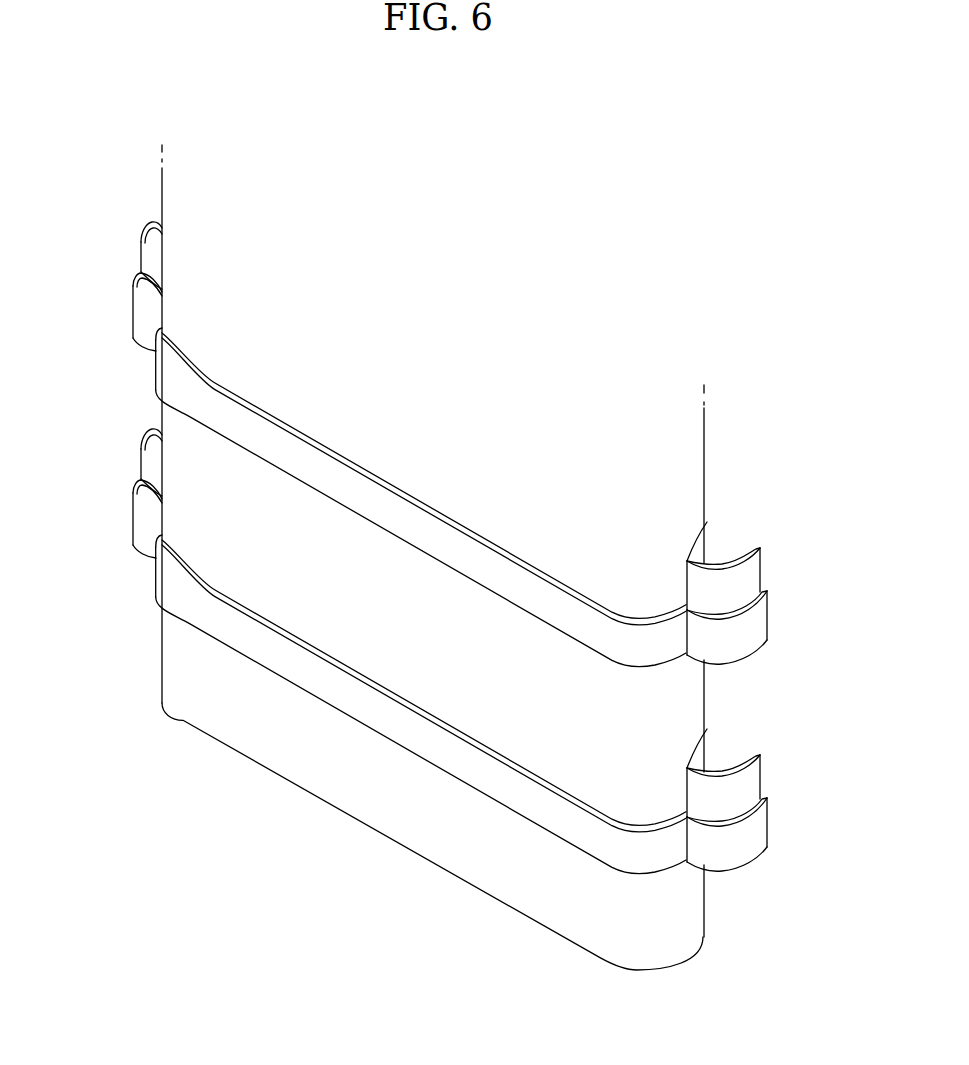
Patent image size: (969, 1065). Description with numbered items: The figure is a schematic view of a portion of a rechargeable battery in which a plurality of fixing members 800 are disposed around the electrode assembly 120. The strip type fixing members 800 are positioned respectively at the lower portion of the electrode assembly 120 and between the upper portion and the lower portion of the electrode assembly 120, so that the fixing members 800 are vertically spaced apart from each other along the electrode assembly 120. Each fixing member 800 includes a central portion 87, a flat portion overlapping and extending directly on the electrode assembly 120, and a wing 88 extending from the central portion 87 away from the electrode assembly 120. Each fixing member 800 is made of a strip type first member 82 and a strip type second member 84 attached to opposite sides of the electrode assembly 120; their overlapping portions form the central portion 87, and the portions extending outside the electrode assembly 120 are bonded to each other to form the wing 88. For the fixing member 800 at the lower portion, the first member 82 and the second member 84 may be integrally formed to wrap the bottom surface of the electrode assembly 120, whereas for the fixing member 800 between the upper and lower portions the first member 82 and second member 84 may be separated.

The electrode assembly 120 is at (430, 833).
The fixing member 800 is at (436, 558).
The central portion 87 is at (266, 656).
The wing 88 is at (461, 558).
The second member 84 is at (712, 532).
The first member 82 is at (645, 660).